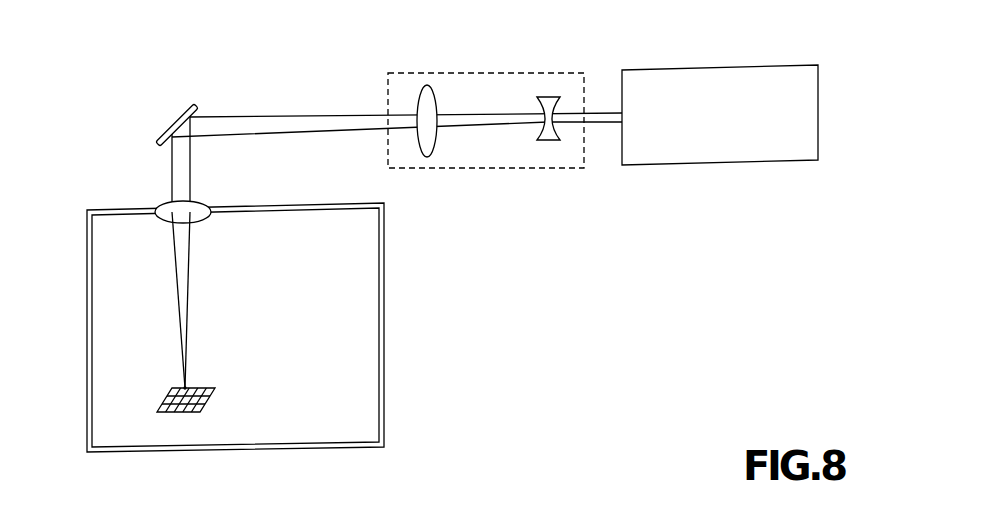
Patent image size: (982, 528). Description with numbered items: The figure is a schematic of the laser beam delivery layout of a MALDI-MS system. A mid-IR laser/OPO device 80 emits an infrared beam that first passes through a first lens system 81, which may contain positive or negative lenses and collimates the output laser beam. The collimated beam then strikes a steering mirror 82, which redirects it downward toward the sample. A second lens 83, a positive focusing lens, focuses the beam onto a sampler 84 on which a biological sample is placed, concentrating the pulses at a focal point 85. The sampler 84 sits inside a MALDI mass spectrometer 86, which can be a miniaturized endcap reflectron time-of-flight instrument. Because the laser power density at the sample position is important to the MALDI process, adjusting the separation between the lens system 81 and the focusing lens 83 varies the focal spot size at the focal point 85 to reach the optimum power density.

The mid-IR laser/OPO device 80 is at (720, 167).
The first lens system 81 is at (487, 170).
The steering mirror 82 is at (171, 118).
The second lens 83 is at (189, 225).
The sampler 84 is at (210, 390).
The focal point 85 is at (143, 301).
The MALDI mass spectrometer 86 is at (386, 325).